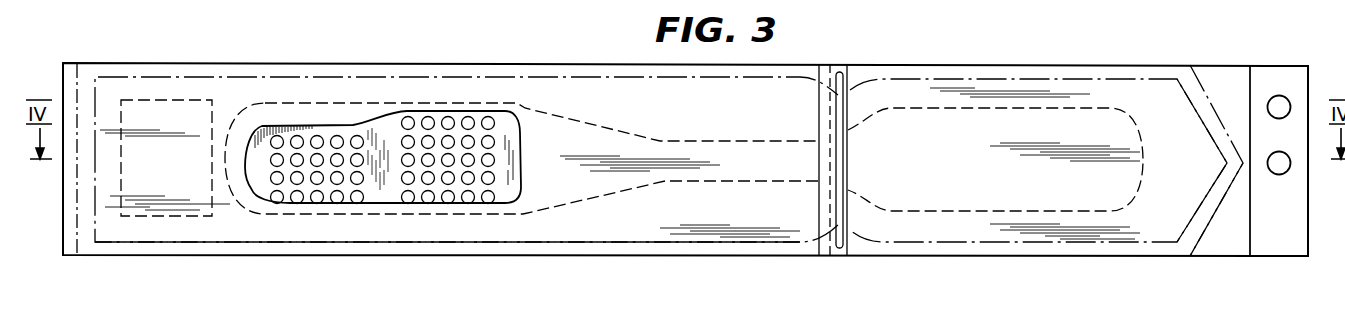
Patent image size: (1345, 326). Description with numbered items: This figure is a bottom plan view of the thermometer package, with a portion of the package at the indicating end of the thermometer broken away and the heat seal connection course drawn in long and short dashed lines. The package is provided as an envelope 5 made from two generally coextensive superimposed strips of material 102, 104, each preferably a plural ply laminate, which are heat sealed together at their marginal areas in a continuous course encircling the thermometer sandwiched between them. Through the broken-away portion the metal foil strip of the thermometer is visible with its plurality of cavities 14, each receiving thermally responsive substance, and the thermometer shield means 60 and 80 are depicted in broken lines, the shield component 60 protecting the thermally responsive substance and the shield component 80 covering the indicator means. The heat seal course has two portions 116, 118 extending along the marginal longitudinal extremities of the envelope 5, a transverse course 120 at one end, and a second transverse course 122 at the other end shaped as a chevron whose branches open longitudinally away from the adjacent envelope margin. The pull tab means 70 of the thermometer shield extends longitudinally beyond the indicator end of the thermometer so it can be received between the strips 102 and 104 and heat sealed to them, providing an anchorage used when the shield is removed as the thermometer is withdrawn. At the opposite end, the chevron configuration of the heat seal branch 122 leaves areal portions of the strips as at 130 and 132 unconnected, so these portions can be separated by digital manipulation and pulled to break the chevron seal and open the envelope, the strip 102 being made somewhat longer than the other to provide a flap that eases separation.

The envelope 5 is at (1075, 67).
The cavities 14 is at (449, 117).
The shield component 60 is at (292, 99).
The pull tab means 70 is at (183, 124).
The shield component 80 is at (684, 158).
The envelope strip 102 is at (1297, 85).
The envelope strip 104 is at (733, 112).
The heat seal course portion 116 is at (536, 71).
The heat seal course portion 118 is at (407, 248).
The transverse course 120 is at (86, 235).
The chevron shaped heat seal course branch 122 is at (1200, 88).
The unconnected areal portion 130 is at (1233, 78).
The unconnected areal portion 132 is at (1216, 245).